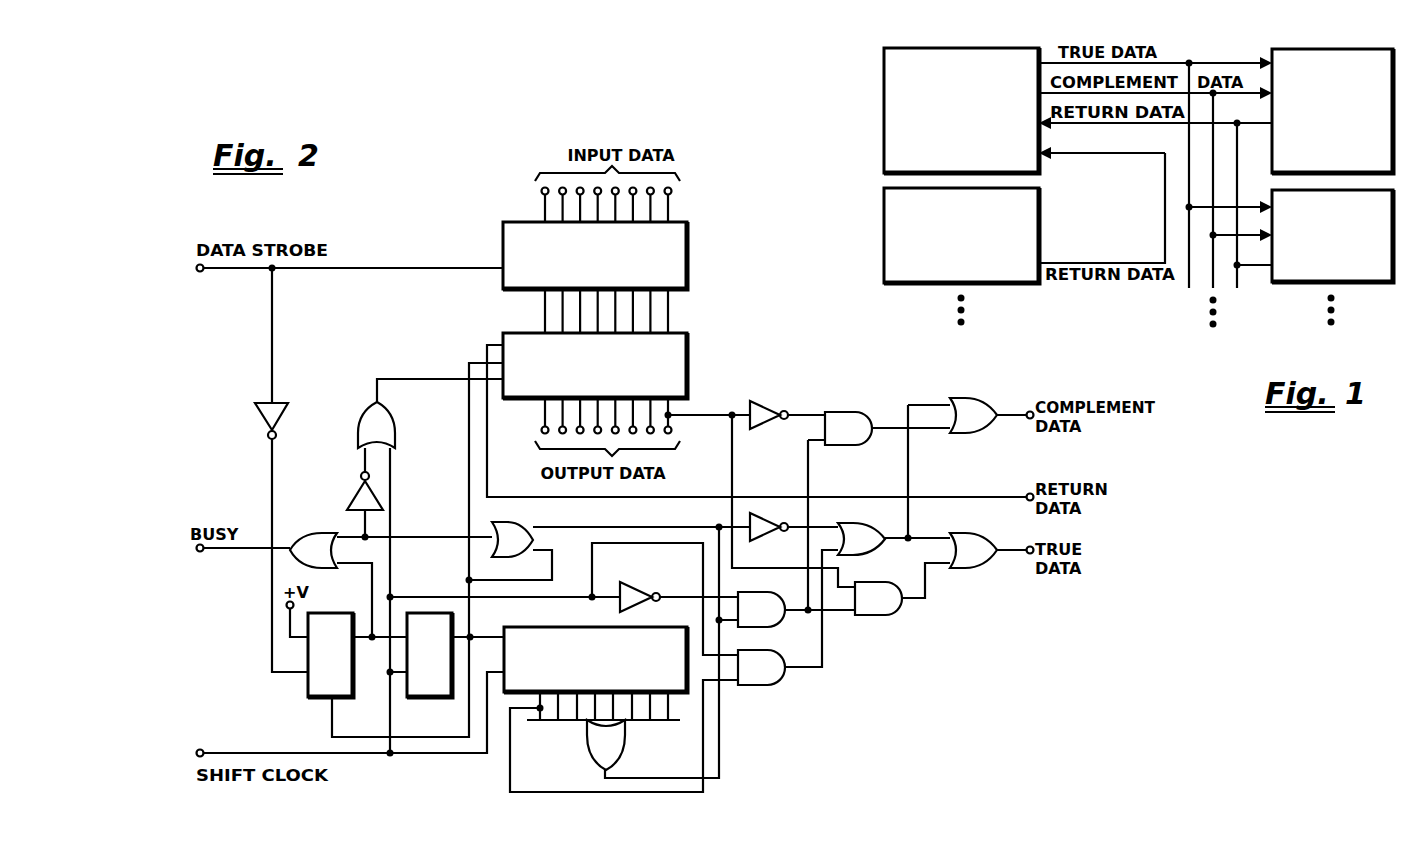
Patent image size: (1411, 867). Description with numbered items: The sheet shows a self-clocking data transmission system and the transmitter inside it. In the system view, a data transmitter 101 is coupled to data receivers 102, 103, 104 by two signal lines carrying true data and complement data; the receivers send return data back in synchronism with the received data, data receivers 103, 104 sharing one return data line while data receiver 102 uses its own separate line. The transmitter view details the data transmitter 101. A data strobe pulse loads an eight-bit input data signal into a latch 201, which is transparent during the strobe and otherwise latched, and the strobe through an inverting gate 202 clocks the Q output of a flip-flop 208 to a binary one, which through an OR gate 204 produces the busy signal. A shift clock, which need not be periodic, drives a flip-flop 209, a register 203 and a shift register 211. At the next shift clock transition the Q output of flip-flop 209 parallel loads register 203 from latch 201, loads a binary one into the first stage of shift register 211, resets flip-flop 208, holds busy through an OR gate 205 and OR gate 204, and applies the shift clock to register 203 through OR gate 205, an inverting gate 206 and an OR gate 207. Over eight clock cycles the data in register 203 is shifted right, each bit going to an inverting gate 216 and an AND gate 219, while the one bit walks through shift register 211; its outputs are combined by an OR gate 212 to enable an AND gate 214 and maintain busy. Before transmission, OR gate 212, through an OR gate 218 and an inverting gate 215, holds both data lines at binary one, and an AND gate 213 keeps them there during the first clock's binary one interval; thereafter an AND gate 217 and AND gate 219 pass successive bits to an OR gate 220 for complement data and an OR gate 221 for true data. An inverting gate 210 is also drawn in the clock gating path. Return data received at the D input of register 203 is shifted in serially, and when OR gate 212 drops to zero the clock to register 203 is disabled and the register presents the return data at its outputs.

In FIG. 1, the data transmitter 101 is at (891, 82).
In FIG. 1, the data receiver 102 is at (891, 222).
In FIG. 1, the data receiver 103 is at (1286, 56).
In FIG. 1, the data receiver 104 is at (1312, 282).
In FIG. 2, the latch 201 is at (686, 256).
In FIG. 2, the inverting gate 202 is at (289, 424).
In FIG. 2, the register 203 is at (688, 372).
In FIG. 2, the OR gate 204 is at (318, 534).
In FIG. 2, the OR gate 205 is at (514, 530).
In FIG. 2, the inverting gate 206 is at (364, 492).
In FIG. 2, the OR gate 207 is at (386, 430).
In FIG. 2, the flip-flop 208 is at (314, 688).
In FIG. 2, the flip-flop 209 is at (438, 696).
In FIG. 2, the inverter 210 is at (643, 593).
In FIG. 2, the shift register 211 is at (547, 638).
In FIG. 2, the OR gate 212 is at (592, 758).
In FIG. 2, the AND gate 213 is at (752, 682).
In FIG. 2, the AND gate 214 is at (759, 625).
In FIG. 2, the inverting gate 215 is at (756, 532).
In FIG. 2, the inverting gate 216 is at (766, 407).
In FIG. 2, the AND gate 217 is at (841, 411).
In FIG. 2, the OR gate 218 is at (872, 546).
In FIG. 2, the AND gate 219 is at (876, 614).
In FIG. 2, the OR gate 220 is at (969, 434).
In FIG. 2, the OR gate 221 is at (977, 568).